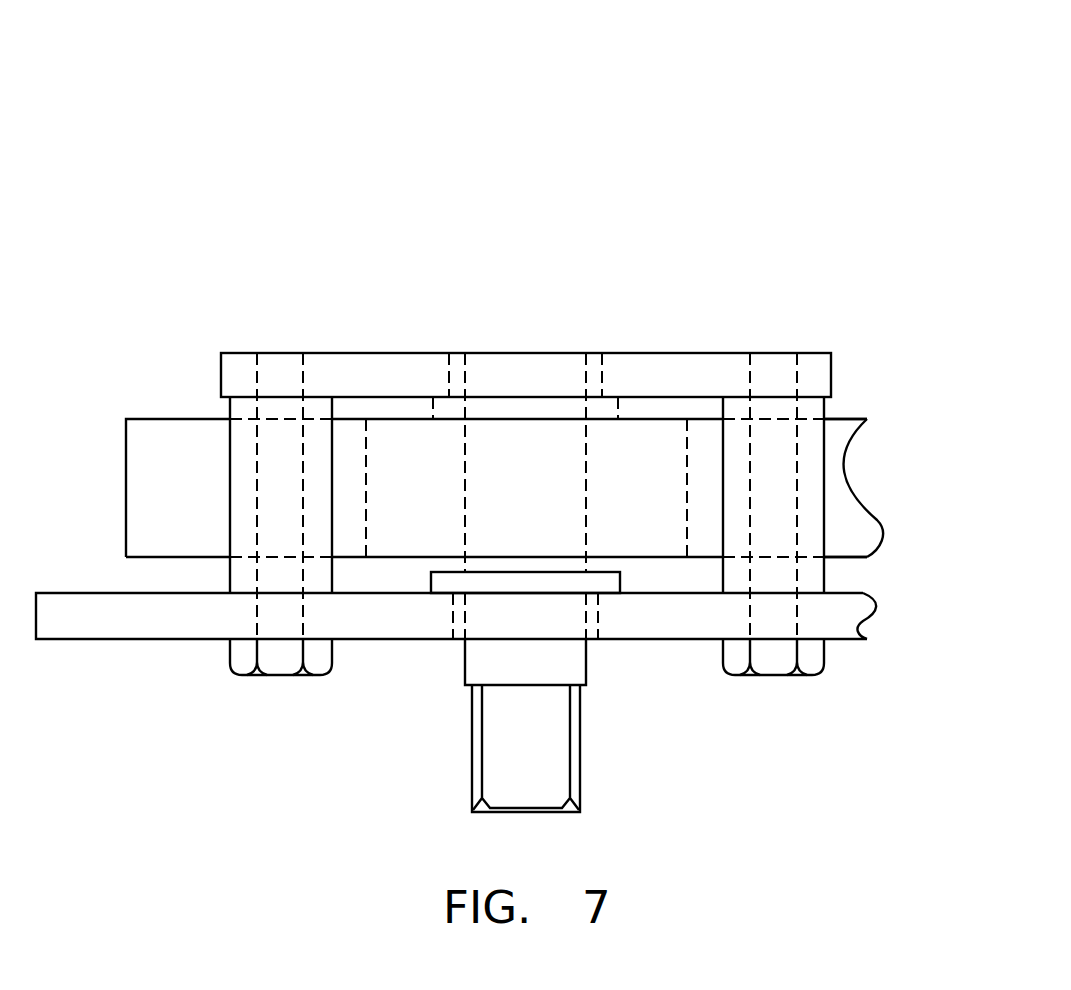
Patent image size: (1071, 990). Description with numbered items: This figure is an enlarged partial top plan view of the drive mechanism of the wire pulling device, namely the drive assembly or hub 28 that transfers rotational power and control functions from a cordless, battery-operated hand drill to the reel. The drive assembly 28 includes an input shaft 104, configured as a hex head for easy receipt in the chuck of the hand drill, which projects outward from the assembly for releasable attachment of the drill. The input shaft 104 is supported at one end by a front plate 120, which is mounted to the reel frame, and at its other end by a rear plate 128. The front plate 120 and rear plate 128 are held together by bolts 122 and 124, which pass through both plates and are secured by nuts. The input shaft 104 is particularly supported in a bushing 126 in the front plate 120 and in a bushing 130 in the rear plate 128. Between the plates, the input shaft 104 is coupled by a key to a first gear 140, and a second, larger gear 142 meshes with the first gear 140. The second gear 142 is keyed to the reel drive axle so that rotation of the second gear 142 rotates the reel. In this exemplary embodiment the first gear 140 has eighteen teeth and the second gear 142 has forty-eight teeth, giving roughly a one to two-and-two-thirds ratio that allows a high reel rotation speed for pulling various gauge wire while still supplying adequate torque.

The drive assembly 28 is at (134, 141).
The input shaft 104 is at (540, 757).
The front plate 120 is at (70, 615).
The bolt 122 is at (272, 657).
The bolt 124 is at (772, 657).
The bushing 126 is at (593, 620).
The rear plate 128 is at (378, 364).
The bushing 130 is at (593, 375).
The first gear 140 is at (151, 461).
The second gear 142 is at (845, 518).